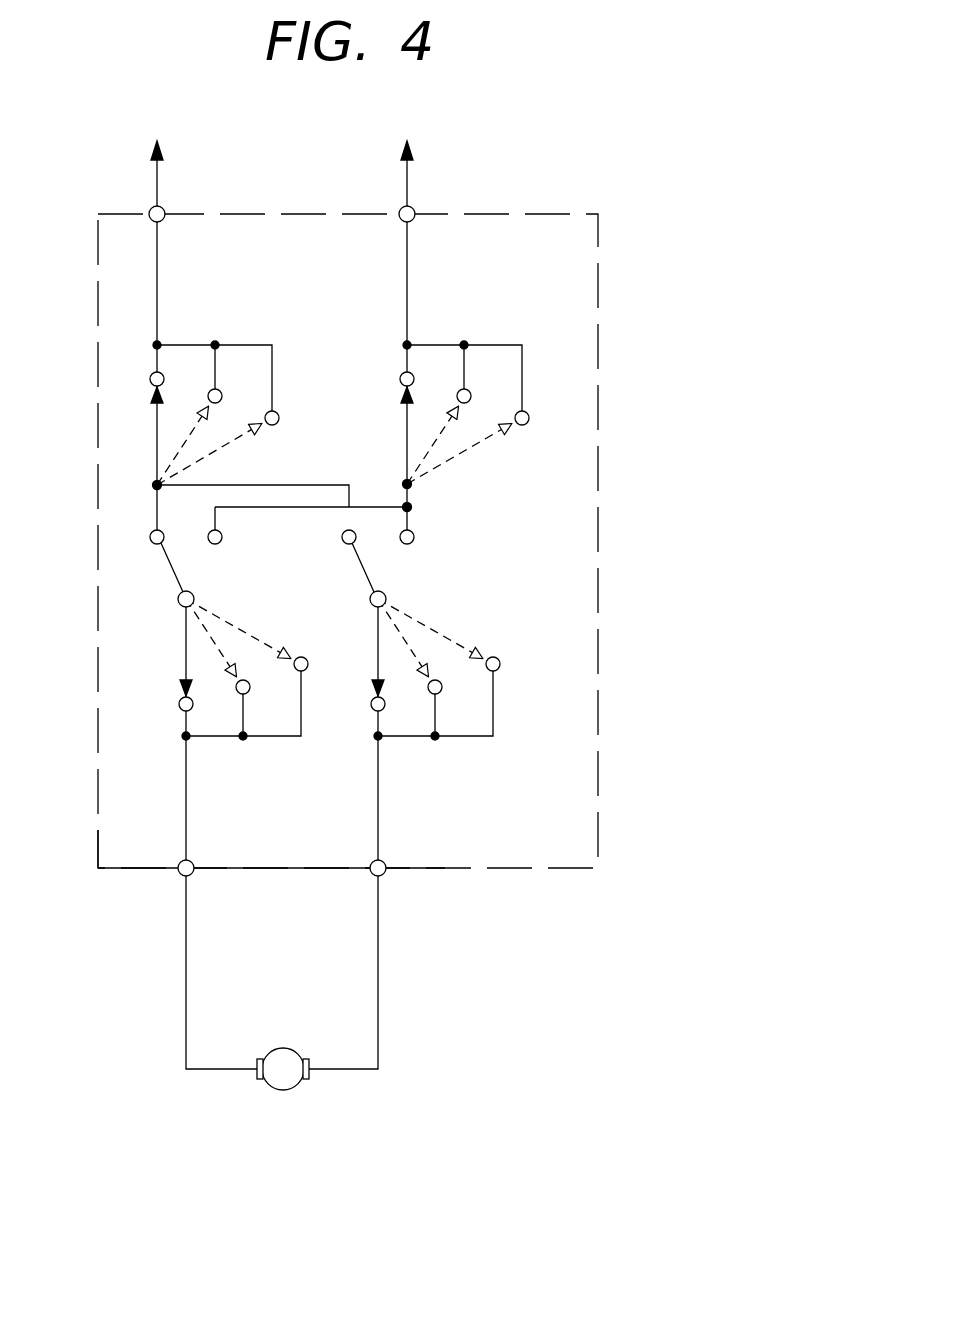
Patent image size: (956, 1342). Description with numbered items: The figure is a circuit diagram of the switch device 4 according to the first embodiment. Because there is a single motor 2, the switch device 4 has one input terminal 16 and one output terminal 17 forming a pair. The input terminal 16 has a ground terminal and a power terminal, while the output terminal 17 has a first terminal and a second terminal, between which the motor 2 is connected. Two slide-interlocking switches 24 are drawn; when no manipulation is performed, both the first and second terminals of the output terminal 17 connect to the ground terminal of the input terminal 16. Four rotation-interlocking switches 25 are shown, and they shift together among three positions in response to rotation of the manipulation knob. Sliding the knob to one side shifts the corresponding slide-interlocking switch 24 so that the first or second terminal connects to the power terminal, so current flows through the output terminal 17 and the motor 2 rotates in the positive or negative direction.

The motor 2 is at (282, 1091).
The switch device 4 is at (576, 212).
The input terminal 16 is at (402, 208).
The output terminal 17 is at (195, 872).
The slide-interlocking switch 24 is at (167, 558).
The rotation-interlocking switch 25 is at (157, 437).